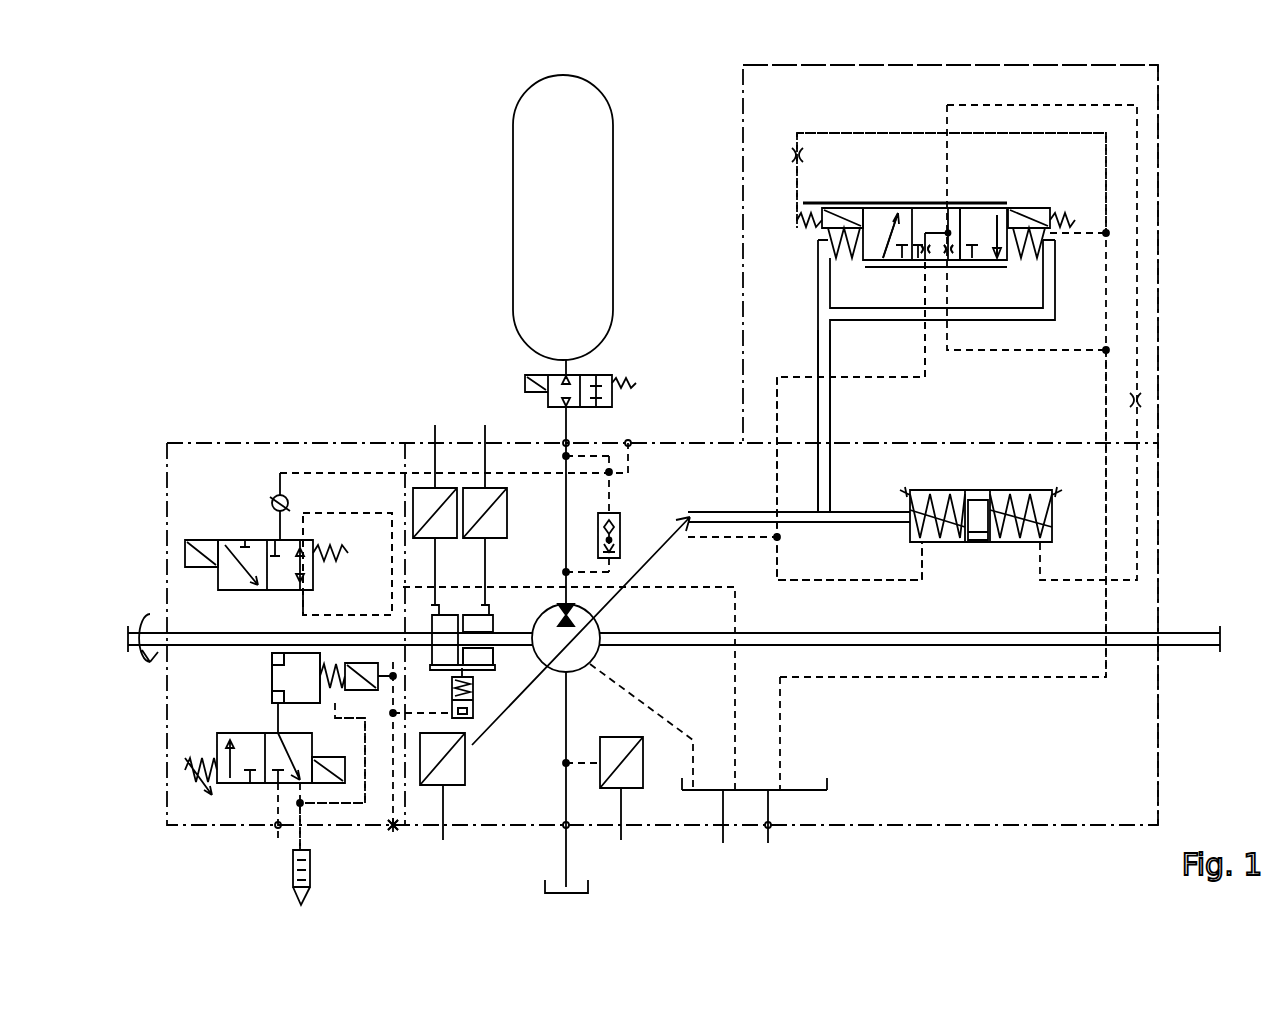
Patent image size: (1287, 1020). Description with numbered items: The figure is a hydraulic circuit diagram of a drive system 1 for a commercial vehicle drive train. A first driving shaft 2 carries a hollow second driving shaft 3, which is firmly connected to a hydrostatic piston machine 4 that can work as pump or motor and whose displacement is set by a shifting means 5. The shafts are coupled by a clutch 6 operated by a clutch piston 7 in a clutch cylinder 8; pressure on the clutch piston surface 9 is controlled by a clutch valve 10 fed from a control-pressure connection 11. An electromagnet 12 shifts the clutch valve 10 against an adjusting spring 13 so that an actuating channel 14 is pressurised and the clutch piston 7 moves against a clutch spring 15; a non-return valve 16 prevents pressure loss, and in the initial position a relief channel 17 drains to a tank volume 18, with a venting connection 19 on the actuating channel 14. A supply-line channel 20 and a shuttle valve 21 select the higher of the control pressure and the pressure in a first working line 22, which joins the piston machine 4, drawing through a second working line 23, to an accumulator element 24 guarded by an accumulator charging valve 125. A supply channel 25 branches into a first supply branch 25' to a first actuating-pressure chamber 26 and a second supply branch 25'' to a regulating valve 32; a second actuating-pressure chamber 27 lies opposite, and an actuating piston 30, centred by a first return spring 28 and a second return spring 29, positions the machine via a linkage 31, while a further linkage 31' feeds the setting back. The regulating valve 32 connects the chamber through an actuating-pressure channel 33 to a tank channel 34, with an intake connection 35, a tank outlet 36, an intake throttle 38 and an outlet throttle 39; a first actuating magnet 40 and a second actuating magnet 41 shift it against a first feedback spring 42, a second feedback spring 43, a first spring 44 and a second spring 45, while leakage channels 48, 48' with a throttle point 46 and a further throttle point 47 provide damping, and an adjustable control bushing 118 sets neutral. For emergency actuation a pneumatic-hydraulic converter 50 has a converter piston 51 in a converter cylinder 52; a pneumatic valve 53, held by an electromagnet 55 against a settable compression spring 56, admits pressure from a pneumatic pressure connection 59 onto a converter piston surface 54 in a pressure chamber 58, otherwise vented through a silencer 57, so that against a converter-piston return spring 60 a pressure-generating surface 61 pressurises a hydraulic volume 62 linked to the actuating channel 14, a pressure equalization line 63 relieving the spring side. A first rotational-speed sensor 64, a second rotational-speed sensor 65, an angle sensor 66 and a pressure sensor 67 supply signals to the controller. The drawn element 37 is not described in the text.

The drive system 1 is at (254, 375).
The first driving shaft 2 is at (158, 632).
The second driving shaft 3 is at (497, 660).
The hydrostatic piston machine 4 is at (590, 622).
The shifting means 5 is at (981, 531).
The clutch 6 is at (490, 677).
The clutch piston 7 is at (452, 700).
The clutch cylinder 8 is at (473, 712).
The clutch piston surface 9 is at (468, 715).
The clutch valve 10 is at (260, 543).
The control-pressure connection 11 is at (630, 441).
The electromagnet 12 is at (185, 548).
The adjusting spring 13 is at (335, 553).
The actuating channel 14 is at (301, 600).
The clutch spring 15 is at (478, 700).
The non-return valve 16 is at (271, 500).
The relief channel 17 is at (341, 516).
The tank volume 18 is at (832, 785).
The venting connection 19 is at (393, 832).
The supply-line channel 20 is at (378, 472).
The shuttle valve 21 is at (622, 520).
The first working line 22 is at (563, 520).
The second working line 23 is at (568, 712).
The hydraulic accumulator element 24 is at (513, 227).
The supply channel 25 is at (799, 541).
The first supply branch 25' is at (849, 497).
The second supply branch 25'' is at (852, 339).
The first actuating-pressure chamber 26 is at (930, 494).
The second actuating-pressure chamber 27 is at (1005, 494).
The first return spring 28 is at (945, 494).
The second return spring 29 is at (1025, 494).
The actuating piston 30 is at (978, 541).
The linkage 31 is at (805, 421).
The further linkage 31' is at (909, 376).
The regulating valve 32 is at (916, 200).
The actuating-pressure channel 33 is at (1160, 270).
The tank channel 34 is at (1104, 400).
The intake connection 35 is at (923, 258).
The tank outlet 36 is at (950, 258).
The valve center position 37 is at (958, 208).
The intake throttle 38 is at (895, 262).
The outlet throttle 39 is at (978, 262).
The first actuating magnet 40 is at (840, 208).
The second actuating magnet 41 is at (1020, 208).
The first feedback spring 42 is at (1045, 250).
The second feedback spring 43 is at (828, 250).
The first spring 44 is at (800, 225).
The second spring 45 is at (1070, 206).
The throttle point 46 is at (790, 156).
The further throttle point 47 is at (1142, 400).
The leakage channel 48 is at (951, 155).
The leakage channel 48' is at (1093, 202).
The pneumatic-hydraulic converter 50 is at (263, 777).
The converter piston 51 is at (296, 678).
The converter cylinder 52 is at (272, 678).
The pneumatic valve 53 is at (226, 803).
The converter piston surface 54 is at (272, 659).
The electromagnet 55 is at (348, 805).
The settable compression spring 56 is at (185, 770).
The silencer 57 is at (293, 873).
The pressure chamber 58 is at (272, 697).
The pneumatic pressure connection 59 is at (272, 832).
The converter-piston return spring 60 is at (330, 757).
The pressure-generating surface 61 is at (362, 690).
The hydraulic volume 62 is at (395, 658).
The pressure equalization line 63 is at (301, 825).
The first rotational-speed sensor 64 is at (447, 542).
The second rotational-speed sensor 65 is at (497, 542).
The angle sensor 66 is at (452, 788).
The pressure sensor 67 is at (635, 790).
The adjustable control bushing 118 is at (818, 204).
The accumulator charging valve 125 is at (613, 358).